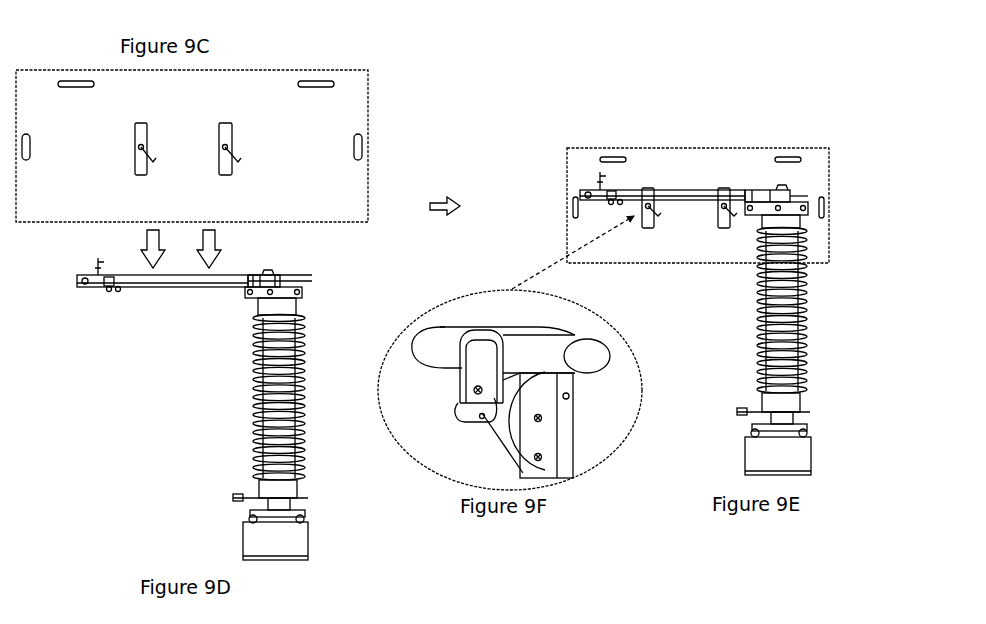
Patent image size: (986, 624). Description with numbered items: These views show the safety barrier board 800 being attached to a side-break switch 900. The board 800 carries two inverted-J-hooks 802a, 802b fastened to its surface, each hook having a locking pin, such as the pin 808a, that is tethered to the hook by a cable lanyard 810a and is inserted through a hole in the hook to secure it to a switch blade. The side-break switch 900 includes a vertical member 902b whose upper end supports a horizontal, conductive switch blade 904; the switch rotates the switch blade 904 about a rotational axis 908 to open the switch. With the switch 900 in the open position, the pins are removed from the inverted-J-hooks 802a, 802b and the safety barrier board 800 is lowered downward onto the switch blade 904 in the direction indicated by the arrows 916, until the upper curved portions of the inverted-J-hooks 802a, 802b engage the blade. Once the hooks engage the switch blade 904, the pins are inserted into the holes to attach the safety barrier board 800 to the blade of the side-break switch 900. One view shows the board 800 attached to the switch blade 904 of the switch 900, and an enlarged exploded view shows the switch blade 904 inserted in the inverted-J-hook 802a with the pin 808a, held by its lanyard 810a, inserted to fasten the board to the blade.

In FIG. 9C, the safety barrier board 800 is at (373, 58).
In FIG. 9E, the safety barrier board 800 is at (836, 132).
In FIG. 9C, the inverted-J-hook 802a is at (139, 123).
In FIG. 9E, the inverted-J-hook 802a is at (649, 188).
In FIG. 9F, the inverted-J-hook 802a is at (483, 355).
In FIG. 9C, the inverted-J-hook 802b is at (224, 123).
In FIG. 9E, the inverted-J-hook 802b is at (724, 188).
In FIG. 9F, the locking pin 808a is at (513, 374).
In FIG. 9F, the cable lanyard 810a is at (580, 438).
In FIG. 9D, the side-break switch 900 is at (88, 410).
In FIG. 9D, the vertical member 902b is at (256, 425).
In FIG. 9E, the vertical member 902b is at (798, 327).
In FIG. 9D, the switch blade 904 is at (170, 283).
In FIG. 9E, the switch blade 904 is at (677, 190).
In FIG. 9F, the switch blade 904 is at (589, 350).
In FIG. 9D, the rotational axis 908 is at (279, 274).
In FIG. 9D, the arrows 916 is at (181, 248).